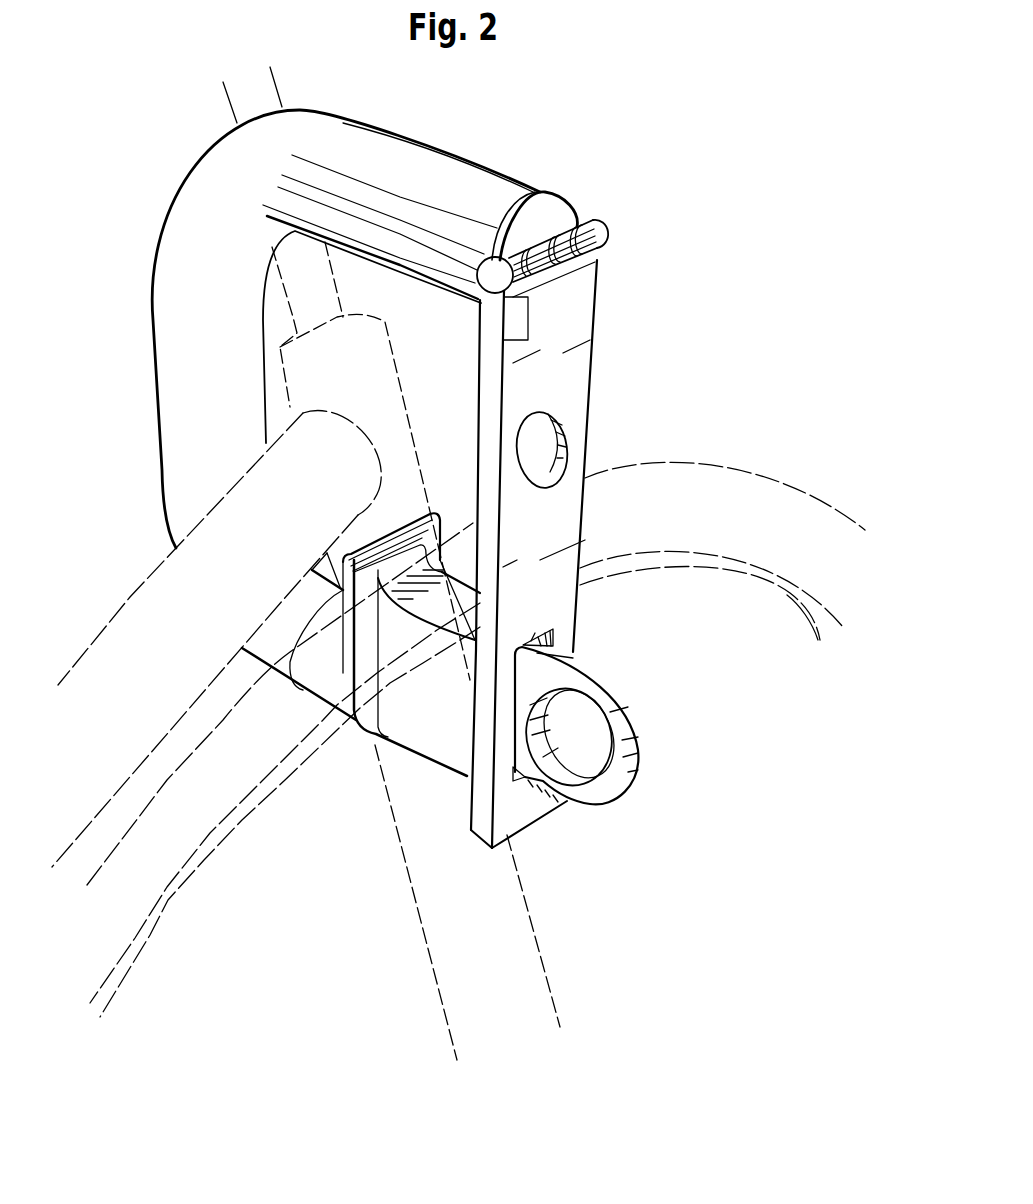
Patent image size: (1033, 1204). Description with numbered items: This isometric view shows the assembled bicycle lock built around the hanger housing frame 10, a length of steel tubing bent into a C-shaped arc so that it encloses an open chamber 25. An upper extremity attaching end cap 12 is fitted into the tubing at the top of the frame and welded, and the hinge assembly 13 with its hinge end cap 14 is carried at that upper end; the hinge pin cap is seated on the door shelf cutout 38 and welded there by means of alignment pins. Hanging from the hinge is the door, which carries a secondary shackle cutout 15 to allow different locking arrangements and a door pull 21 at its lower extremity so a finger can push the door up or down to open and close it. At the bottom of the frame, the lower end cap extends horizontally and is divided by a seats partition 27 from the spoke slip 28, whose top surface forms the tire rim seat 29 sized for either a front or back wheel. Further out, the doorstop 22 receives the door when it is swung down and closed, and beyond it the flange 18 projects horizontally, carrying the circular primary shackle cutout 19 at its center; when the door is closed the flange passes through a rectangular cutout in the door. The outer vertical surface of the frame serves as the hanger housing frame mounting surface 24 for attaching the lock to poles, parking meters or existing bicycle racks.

The hanger housing frame 10 is at (170, 146).
The upper extremity attaching end cap 12 is at (550, 212).
The hinge assembly 13 is at (606, 250).
The hinge end cap 14 is at (492, 322).
The secondary shackle cutout 15 is at (548, 440).
The flange 18 is at (638, 728).
The primary shackle cutout 19 is at (597, 752).
The door pull 21 is at (560, 810).
The doorstop 22 is at (483, 807).
The hanger housing frame mounting surface 24 is at (173, 333).
The chamber 25 is at (370, 297).
The seats partition 27 is at (400, 523).
The spoke slip 28 is at (432, 722).
The tire rim seat 29 is at (448, 597).
The door shelf cutout 38 is at (480, 330).